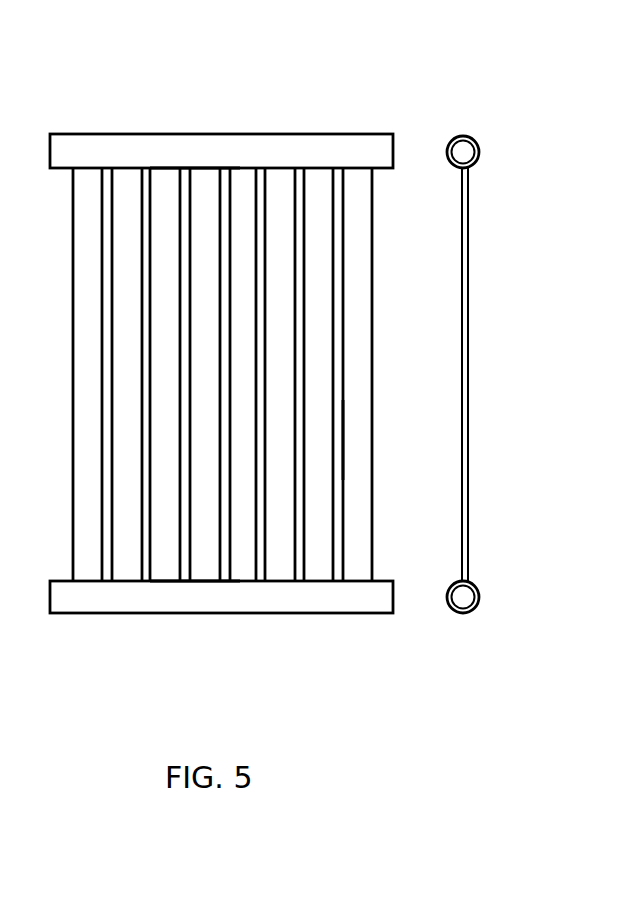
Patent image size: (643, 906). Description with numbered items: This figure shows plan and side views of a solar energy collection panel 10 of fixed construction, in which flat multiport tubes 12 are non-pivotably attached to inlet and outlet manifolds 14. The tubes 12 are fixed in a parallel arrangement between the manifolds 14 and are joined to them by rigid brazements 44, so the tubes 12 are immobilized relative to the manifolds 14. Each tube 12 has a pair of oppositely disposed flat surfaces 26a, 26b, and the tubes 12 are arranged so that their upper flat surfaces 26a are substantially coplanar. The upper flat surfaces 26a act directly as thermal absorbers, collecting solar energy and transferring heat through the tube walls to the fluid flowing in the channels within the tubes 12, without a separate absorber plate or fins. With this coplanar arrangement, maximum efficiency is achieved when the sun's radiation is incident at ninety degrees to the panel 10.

The solar energy collection panel 10 is at (140, 53).
The flat multiport tube 12 is at (325, 280).
The manifold 14 is at (283, 147).
The upper flat surface 26a is at (322, 470).
The lower flat surface 26b is at (470, 288).
The rigid brazement 44 is at (210, 168).